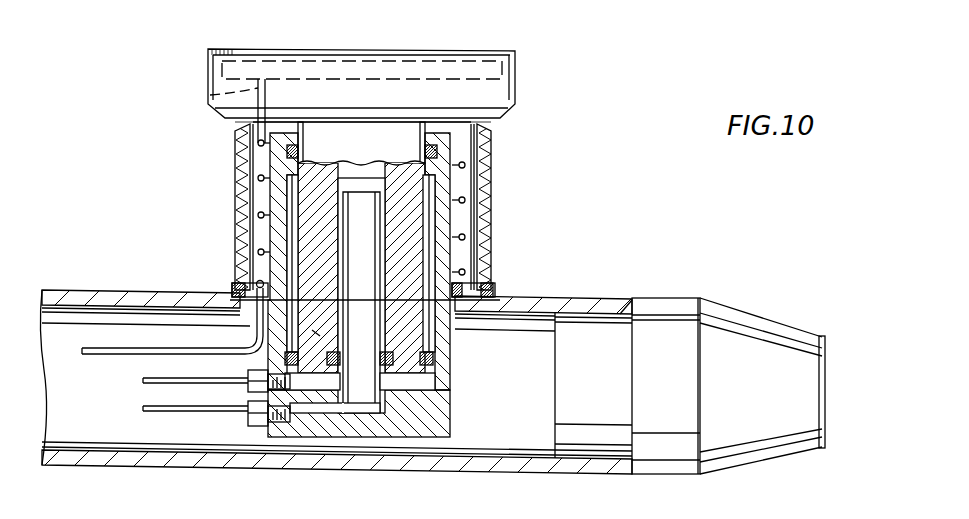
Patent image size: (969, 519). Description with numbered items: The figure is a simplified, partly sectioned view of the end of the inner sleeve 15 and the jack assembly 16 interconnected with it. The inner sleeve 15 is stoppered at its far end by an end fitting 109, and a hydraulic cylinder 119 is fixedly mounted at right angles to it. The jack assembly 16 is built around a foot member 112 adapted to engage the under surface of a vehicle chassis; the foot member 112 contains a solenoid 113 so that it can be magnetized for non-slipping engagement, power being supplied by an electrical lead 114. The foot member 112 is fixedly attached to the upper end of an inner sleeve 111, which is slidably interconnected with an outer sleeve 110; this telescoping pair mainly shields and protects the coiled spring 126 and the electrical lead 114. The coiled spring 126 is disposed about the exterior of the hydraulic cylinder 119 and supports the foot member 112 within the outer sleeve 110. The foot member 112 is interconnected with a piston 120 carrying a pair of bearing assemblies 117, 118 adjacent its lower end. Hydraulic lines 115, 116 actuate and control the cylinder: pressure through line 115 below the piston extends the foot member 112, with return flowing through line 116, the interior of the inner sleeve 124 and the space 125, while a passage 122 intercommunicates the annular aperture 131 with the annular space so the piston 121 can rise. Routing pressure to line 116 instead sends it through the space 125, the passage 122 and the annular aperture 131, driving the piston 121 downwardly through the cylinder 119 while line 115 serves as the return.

The inner sleeve 15 is at (82, 290).
The jack assembly 16 is at (531, 164).
The end fitting 109 is at (745, 315).
The outer sleeve 110 is at (489, 254).
The inner sleeve 111 is at (488, 224).
The foot member 112 is at (518, 79).
The solenoid 113 is at (343, 58).
The electrical lead 114 is at (258, 88).
The hydraulic line 115 is at (175, 377).
The hydraulic line 116 is at (152, 417).
The bearing assembly 117 is at (395, 382).
The bearing assembly 118 is at (436, 366).
The hydraulic cylinder 119 is at (297, 199).
The piston 120 is at (413, 328).
The piston 121 is at (337, 238).
The passage 122 is at (316, 332).
The inner sleeve 124 is at (386, 221).
The space 125 is at (366, 175).
The coiled spring 126 is at (463, 166).
The annular aperture 131 is at (440, 289).